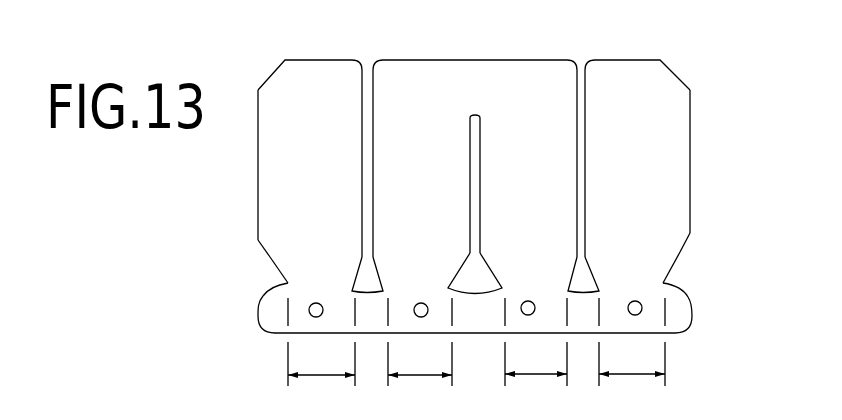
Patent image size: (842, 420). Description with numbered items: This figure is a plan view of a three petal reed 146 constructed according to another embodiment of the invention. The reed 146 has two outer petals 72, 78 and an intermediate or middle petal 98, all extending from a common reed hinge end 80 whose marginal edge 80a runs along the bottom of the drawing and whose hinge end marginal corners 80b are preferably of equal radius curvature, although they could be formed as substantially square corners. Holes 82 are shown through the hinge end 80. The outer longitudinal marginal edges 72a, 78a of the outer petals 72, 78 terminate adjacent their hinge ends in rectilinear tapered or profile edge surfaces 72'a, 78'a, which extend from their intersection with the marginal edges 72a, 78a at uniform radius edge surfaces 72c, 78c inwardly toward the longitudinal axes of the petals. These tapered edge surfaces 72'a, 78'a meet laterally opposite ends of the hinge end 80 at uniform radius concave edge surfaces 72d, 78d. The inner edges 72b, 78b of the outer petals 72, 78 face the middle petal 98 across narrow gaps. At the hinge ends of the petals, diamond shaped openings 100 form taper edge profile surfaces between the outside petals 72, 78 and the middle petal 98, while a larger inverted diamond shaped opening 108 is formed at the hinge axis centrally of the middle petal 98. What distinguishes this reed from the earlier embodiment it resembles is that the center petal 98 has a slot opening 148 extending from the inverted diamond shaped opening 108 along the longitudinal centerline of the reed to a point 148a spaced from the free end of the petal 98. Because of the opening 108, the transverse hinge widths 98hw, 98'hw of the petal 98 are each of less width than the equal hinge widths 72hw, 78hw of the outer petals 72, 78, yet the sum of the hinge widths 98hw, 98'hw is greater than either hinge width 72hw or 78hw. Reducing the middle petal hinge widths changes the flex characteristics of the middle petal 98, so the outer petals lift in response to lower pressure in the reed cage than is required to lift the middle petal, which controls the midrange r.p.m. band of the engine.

The reed 146 is at (234, 88).
The outer petal 72 is at (310, 52).
The outer longitudinal marginal edge 72a is at (259, 152).
The first blade inner edge 72b is at (361, 95).
The uniform radius edge surface 72c is at (258, 240).
The tapered edge surface 72'a is at (240, 270).
The uniform radius concave edge surface 72d is at (281, 288).
The middle petal 98 is at (475, 135).
The outer petal 78 is at (637, 52).
The outer longitudinal marginal edge 78a is at (691, 114).
The second blade inner edge 78b is at (586, 97).
The uniform radius edge surface 78c is at (691, 233).
The tapered edge surface 78'a is at (711, 262).
The uniform radius concave edge surface 78d is at (665, 283).
The diamond shaped opening 100 is at (372, 291).
The slot opening 148 is at (480, 172).
The point 148a is at (483, 115).
The diamond shaped opening 108 is at (462, 290).
The reed hinge end 80 is at (412, 329).
The marginal edge 80a is at (504, 334).
The hinge end marginal corner 80b is at (268, 316).
The hole 82 is at (632, 311).
The hinge width 72hw is at (312, 378).
The hinge width 98hw is at (410, 378).
The hinge width 98'hw is at (512, 351).
The hinge width 78hw is at (628, 375).